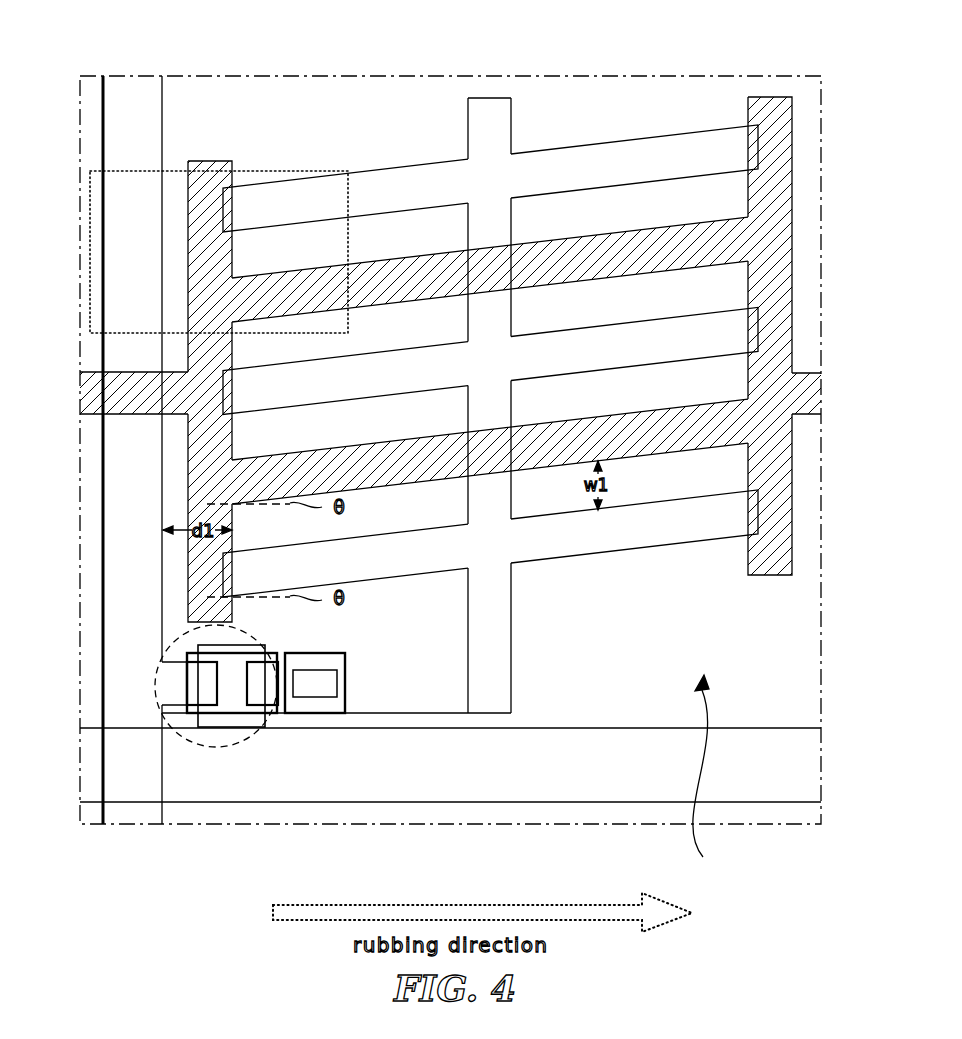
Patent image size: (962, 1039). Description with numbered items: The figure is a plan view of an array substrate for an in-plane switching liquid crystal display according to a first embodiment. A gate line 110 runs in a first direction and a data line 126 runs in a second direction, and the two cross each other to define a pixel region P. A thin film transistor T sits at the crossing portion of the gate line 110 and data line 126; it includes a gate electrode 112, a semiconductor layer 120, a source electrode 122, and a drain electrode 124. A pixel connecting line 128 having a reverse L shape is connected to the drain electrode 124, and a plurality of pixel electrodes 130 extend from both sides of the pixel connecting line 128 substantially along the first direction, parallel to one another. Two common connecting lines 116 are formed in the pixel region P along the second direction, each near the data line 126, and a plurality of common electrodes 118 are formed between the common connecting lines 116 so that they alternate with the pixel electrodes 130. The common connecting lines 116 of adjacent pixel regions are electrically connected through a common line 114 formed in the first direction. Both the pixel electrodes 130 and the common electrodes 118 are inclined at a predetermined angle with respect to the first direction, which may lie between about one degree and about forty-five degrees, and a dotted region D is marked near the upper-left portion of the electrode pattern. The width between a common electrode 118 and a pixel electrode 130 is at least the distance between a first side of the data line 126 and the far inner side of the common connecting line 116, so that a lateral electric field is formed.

The gate line 110 is at (822, 728).
The gate electrode 112 is at (255, 718).
The common line 114 is at (818, 393).
The common connecting line 116 is at (783, 232).
The common electrode 118 is at (380, 505).
The semiconductor layer 120 is at (213, 717).
The source electrode 122 is at (207, 692).
The drain electrode 124 is at (260, 692).
The data line 126 is at (103, 827).
The pixel connecting line 128 is at (497, 607).
The pixel electrode 130 is at (664, 573).
The thin film transistor T is at (242, 743).
The domain region D is at (272, 170).
The pixel region P is at (701, 777).